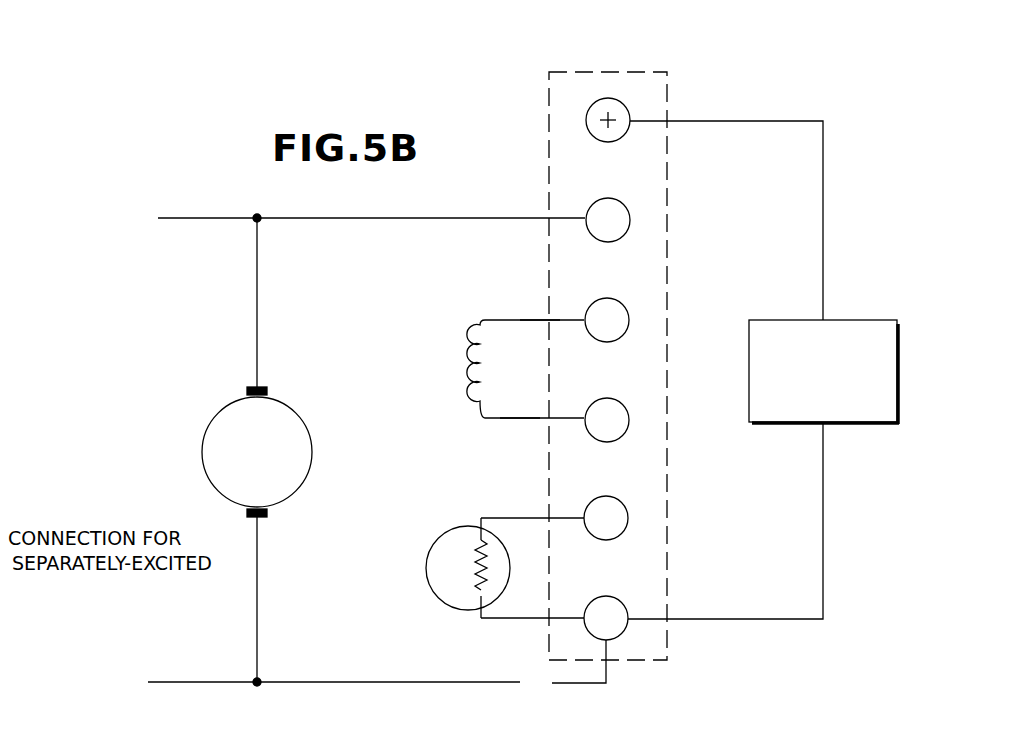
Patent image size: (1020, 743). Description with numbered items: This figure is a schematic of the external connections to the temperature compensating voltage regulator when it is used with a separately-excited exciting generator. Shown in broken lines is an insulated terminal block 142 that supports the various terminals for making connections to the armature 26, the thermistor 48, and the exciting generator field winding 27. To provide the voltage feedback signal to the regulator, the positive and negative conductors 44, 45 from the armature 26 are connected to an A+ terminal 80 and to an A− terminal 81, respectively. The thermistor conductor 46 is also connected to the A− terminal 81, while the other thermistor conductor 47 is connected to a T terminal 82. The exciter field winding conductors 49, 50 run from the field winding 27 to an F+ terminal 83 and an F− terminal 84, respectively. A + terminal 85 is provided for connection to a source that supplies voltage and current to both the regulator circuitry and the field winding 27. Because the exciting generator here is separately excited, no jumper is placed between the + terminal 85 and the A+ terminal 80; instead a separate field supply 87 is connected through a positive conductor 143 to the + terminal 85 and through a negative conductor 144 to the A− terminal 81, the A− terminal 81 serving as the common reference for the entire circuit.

The armature 26 is at (301, 425).
The field winding 27 is at (471, 371).
The positive conductor 44 is at (403, 217).
The negative conductor 45 is at (345, 681).
The thermistor conductor 46 is at (510, 620).
The thermistor conductor 47 is at (521, 518).
The thermistor 48 is at (452, 532).
The exciter field winding conductor 49 is at (520, 319).
The exciter field winding conductor 50 is at (510, 418).
The A+ terminal 80 is at (593, 199).
The A− terminal 81 is at (625, 608).
The T terminal 82 is at (624, 501).
The F+ terminal 83 is at (627, 304).
The F− terminal 84 is at (627, 411).
The + terminal 85 is at (589, 110).
The separate field supply 87 is at (882, 318).
The insulated terminal block 142 is at (636, 72).
The positive conductor 143 is at (766, 121).
The negative conductor 144 is at (755, 620).